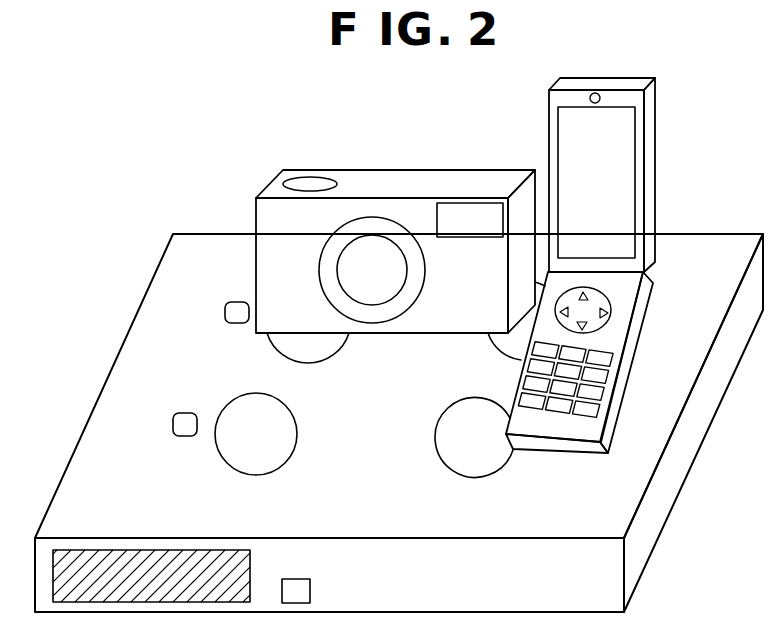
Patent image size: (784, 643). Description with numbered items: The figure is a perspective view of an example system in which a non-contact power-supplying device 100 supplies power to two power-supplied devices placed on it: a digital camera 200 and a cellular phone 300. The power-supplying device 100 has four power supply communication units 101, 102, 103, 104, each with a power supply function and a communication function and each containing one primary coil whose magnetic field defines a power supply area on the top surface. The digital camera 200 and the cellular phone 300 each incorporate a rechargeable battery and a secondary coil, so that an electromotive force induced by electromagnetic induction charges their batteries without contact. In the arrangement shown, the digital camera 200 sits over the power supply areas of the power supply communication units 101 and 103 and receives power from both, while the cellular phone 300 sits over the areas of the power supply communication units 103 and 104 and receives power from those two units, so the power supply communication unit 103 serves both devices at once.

The power-supplying device 100 is at (728, 179).
The power supply communication unit 101 is at (320, 363).
The power supply communication unit 102 is at (272, 475).
The power supply communication unit 103 is at (495, 345).
The power supply communication unit 104 is at (493, 473).
The digital camera 200 is at (413, 170).
The cellular phone 300 is at (609, 77).